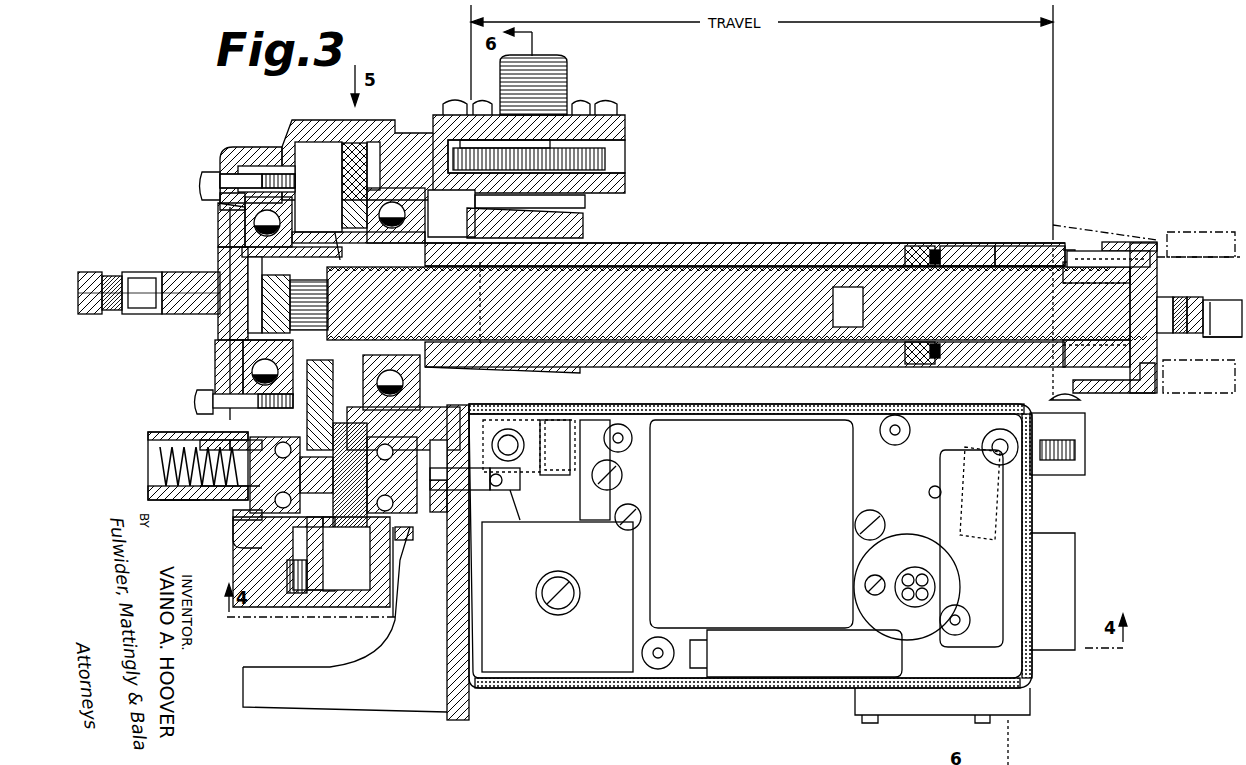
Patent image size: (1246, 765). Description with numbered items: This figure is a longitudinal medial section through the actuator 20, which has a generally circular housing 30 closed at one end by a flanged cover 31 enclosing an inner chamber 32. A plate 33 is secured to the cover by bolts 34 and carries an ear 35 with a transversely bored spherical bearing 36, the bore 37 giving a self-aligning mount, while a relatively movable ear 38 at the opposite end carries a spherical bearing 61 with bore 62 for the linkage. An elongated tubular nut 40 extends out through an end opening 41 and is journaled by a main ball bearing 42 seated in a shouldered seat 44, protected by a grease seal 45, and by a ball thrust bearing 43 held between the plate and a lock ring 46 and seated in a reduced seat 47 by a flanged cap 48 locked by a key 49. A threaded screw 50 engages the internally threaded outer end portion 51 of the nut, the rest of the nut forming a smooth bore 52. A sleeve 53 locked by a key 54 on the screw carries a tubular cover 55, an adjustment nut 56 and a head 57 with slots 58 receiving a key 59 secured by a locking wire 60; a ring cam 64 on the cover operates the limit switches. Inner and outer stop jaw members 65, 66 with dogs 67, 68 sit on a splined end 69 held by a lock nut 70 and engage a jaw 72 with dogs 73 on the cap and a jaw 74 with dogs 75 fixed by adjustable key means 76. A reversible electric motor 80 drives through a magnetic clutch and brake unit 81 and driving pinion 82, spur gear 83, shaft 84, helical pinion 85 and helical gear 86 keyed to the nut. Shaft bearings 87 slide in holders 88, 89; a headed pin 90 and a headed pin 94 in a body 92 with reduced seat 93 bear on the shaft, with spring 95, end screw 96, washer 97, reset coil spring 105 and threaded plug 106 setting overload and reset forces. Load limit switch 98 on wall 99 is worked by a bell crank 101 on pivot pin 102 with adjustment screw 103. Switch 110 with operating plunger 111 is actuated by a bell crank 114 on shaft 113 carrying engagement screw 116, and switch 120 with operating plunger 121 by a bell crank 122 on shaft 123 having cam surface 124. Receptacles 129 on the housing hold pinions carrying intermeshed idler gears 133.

The actuator 20 is at (727, 162).
The housing 30 is at (418, 150).
The flanged cover 31 is at (234, 152).
The inner chamber 32 is at (286, 126).
The plate 33 is at (226, 210).
The bolts 34 is at (208, 176).
The ear 35 is at (92, 306).
The spherical bearing 36 is at (114, 278).
The bore 37 is at (138, 275).
The ear 38 is at (1170, 300).
The tubular nut 40 is at (702, 248).
The end opening 41 is at (436, 226).
The main ball bearing 42 is at (407, 140).
The ball thrust bearing 43 is at (206, 186).
The shouldered seat 44 is at (424, 400).
The grease seal 45 is at (424, 382).
The lock ring 46 is at (296, 214).
The reduced seat 47 is at (290, 250).
The flanged cap 48 is at (205, 276).
The key 49 is at (226, 232).
The screw 50 is at (760, 274).
The internally threaded outer end portion 51 is at (1002, 248).
The bore 52 is at (637, 250).
The sleeve 53 is at (1140, 356).
The key 54 is at (1135, 290).
The tubular cover 55 is at (840, 248).
The adjustment nut 56 is at (1150, 392).
The head 57 is at (1138, 242).
The slots 58 is at (1160, 243).
The key 59 is at (1166, 256).
The locking wire 60 is at (1075, 248).
The spherical bearing 61 is at (1208, 338).
The bore 62 is at (1215, 304).
The ring cam 64 is at (590, 220).
The inner stop jaw member 65 is at (242, 356).
The outer stop jaw member 66 is at (232, 374).
The end dogs 67 is at (236, 342).
The end dogs 68 is at (334, 232).
The splined end 69 is at (258, 322).
The lock nut 70 is at (220, 320).
The jaw 72 is at (226, 268).
The dogs 73 is at (270, 256).
The jaw 74 is at (960, 264).
The dogs 75 is at (912, 262).
The adjustable key means 76 is at (934, 262).
The reversible electric motor 80 is at (682, 690).
The magnetic clutch and brake unit 81 is at (492, 660).
The driving pinion 82 is at (285, 575).
The spur gear 83 is at (325, 560).
The shaft 84 is at (298, 478).
The helical pinion 85 is at (366, 498).
The helical gear 86 is at (344, 170).
The bearings 87 is at (398, 540).
The cup-like holder 88 is at (366, 522).
The cup-like holder 89 is at (300, 404).
The headed pin 90 is at (410, 545).
The cylindrical body 92 is at (212, 438).
The reduced seat 93 is at (240, 442).
The headed pin 94 is at (250, 526).
The spring 95 is at (180, 502).
The end screw 96 is at (150, 440).
The washer 97 is at (240, 514).
The load limit switch 98 is at (520, 494).
The wall 99 is at (478, 596).
The bell crank 101 is at (460, 479).
The pivot pin 102 is at (444, 512).
The adjustment screw 103 is at (496, 488).
The reset coil spring 105 is at (214, 494).
The threaded plug 106 is at (160, 456).
The switch 110 is at (992, 580).
The operating plunger 111 is at (1015, 508).
The shaft 113 is at (998, 440).
The bell crank 114 is at (1082, 424).
The adjustable engagement screw 116 is at (1078, 396).
The switch 120 is at (572, 522).
The operating plunger 121 is at (560, 453).
The bell crank 122 is at (514, 432).
The shaft 123 is at (592, 422).
The wedge-shaped cam surface 124 is at (652, 437).
The receptacles 129 is at (570, 76).
The idler gears 133 is at (608, 158).